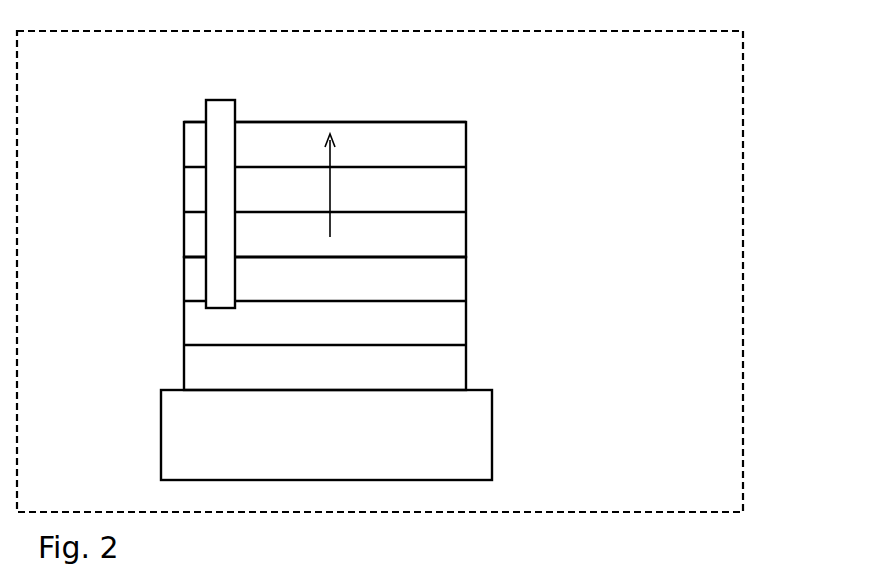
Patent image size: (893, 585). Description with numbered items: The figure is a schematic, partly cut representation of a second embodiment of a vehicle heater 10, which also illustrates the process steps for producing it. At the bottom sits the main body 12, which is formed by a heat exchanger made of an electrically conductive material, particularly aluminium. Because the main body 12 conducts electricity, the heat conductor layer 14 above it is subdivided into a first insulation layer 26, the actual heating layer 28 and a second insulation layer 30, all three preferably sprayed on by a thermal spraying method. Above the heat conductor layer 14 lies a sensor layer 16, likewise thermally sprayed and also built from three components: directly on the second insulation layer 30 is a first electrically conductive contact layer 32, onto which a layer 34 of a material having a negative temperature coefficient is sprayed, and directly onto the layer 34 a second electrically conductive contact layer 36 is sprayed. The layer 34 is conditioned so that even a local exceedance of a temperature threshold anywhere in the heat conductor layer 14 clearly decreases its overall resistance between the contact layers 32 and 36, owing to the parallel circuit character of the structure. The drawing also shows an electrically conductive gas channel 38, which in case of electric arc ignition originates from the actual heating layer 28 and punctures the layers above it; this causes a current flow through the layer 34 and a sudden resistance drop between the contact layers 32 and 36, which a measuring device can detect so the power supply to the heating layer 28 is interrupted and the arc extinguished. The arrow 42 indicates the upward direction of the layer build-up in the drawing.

The vehicle heater 10 is at (108, 510).
The main body 12 is at (492, 406).
The heat conductor layer 14 is at (578, 245).
The sensor layer 16 is at (578, 105).
The first insulation layer 26 is at (466, 355).
The actual heating layer 28 is at (466, 308).
The second insulation layer 30 is at (466, 265).
The first electrically conductive contact layer 32 is at (466, 222).
The layer having a negative temperature coefficient 34 is at (466, 176).
The second electrically conductive contact layer 36 is at (466, 132).
The gas channel 38 is at (205, 148).
The light emission direction 42 is at (332, 182).